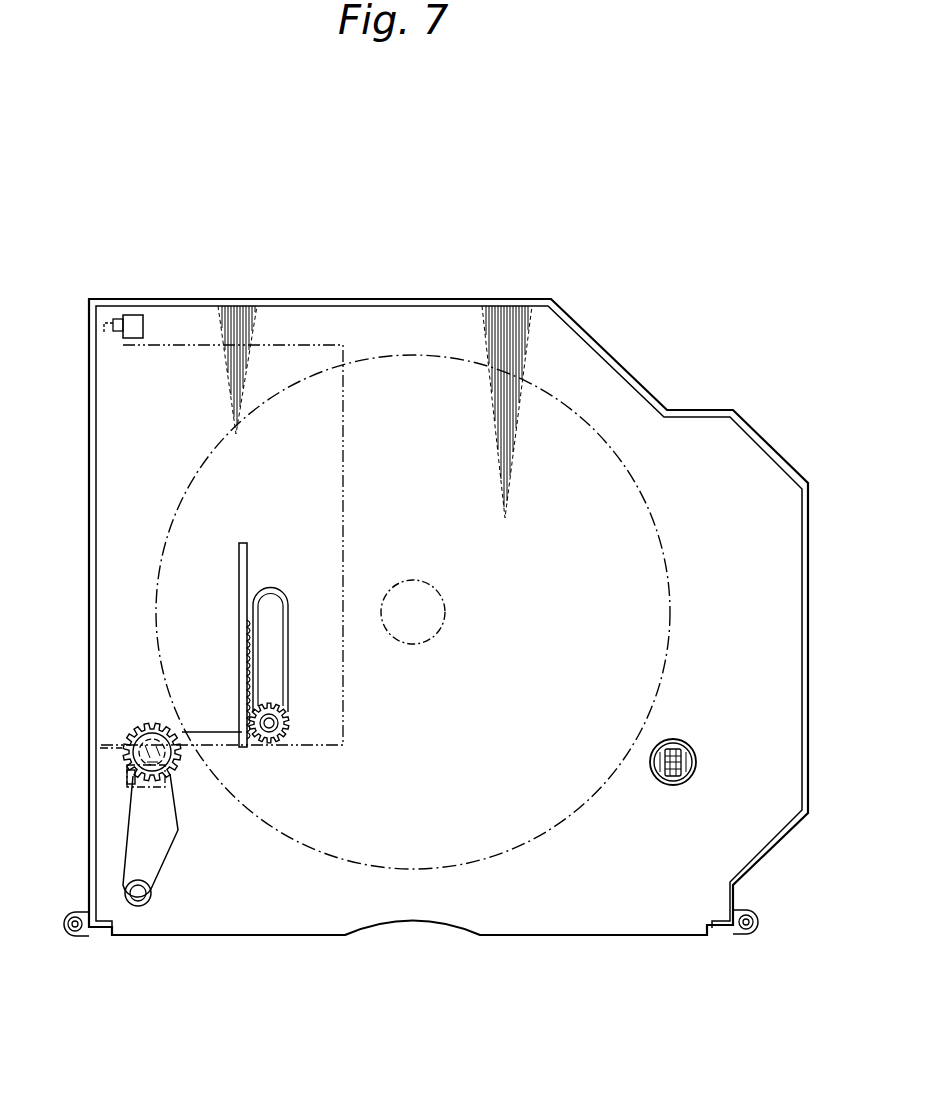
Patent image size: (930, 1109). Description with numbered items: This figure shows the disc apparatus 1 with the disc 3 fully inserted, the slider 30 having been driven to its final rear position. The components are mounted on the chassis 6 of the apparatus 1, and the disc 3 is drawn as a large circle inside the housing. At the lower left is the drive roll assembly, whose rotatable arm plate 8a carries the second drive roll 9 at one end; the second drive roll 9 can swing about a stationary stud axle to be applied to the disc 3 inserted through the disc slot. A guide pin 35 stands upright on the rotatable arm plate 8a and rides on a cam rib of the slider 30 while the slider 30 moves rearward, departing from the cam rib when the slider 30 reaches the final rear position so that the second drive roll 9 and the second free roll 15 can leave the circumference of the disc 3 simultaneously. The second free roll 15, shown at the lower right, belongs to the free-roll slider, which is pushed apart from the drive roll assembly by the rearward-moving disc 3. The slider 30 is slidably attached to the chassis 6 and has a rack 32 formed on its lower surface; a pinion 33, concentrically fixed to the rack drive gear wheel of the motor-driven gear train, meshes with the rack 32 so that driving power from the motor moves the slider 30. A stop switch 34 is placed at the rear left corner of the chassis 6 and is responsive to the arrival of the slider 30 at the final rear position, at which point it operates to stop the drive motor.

The apparatus 1 is at (456, 608).
The disc 3 is at (660, 522).
The chassis 6 is at (808, 620).
The rotatable arm plate 8a is at (128, 843).
The second drive roll 9 is at (143, 737).
The second free roll 15 is at (696, 760).
The slider 30 is at (344, 508).
The rack 32 is at (250, 645).
The pinion 33 is at (289, 722).
The stop switch 34 is at (135, 314).
The guide pin 35 is at (127, 776).